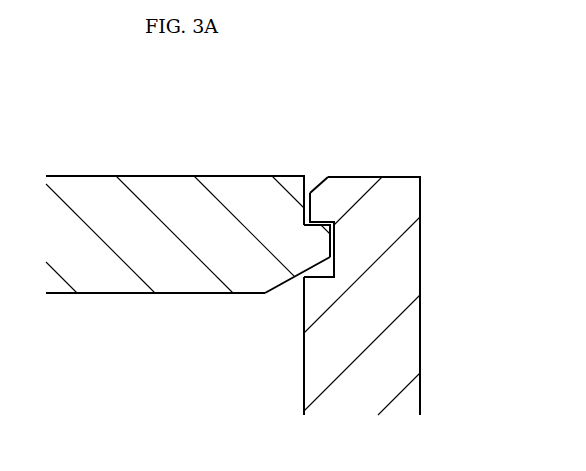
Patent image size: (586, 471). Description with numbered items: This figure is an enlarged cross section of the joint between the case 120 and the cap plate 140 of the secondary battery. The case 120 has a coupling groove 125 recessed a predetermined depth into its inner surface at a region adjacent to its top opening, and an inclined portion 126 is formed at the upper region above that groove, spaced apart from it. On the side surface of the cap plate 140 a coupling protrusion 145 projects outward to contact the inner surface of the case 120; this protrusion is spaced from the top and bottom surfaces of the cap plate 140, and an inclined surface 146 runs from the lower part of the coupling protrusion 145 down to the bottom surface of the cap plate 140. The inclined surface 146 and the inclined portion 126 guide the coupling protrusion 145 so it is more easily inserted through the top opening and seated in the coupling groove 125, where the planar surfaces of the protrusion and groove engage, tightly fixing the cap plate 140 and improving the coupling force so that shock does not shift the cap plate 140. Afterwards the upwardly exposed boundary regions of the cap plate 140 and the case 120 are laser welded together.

The case 120 is at (403, 335).
The coupling groove 125 is at (334, 240).
The inclined portion 126 is at (314, 190).
The cap plate 140 is at (160, 198).
The coupling protrusion 145 is at (323, 252).
The inclined surface 146 is at (292, 282).